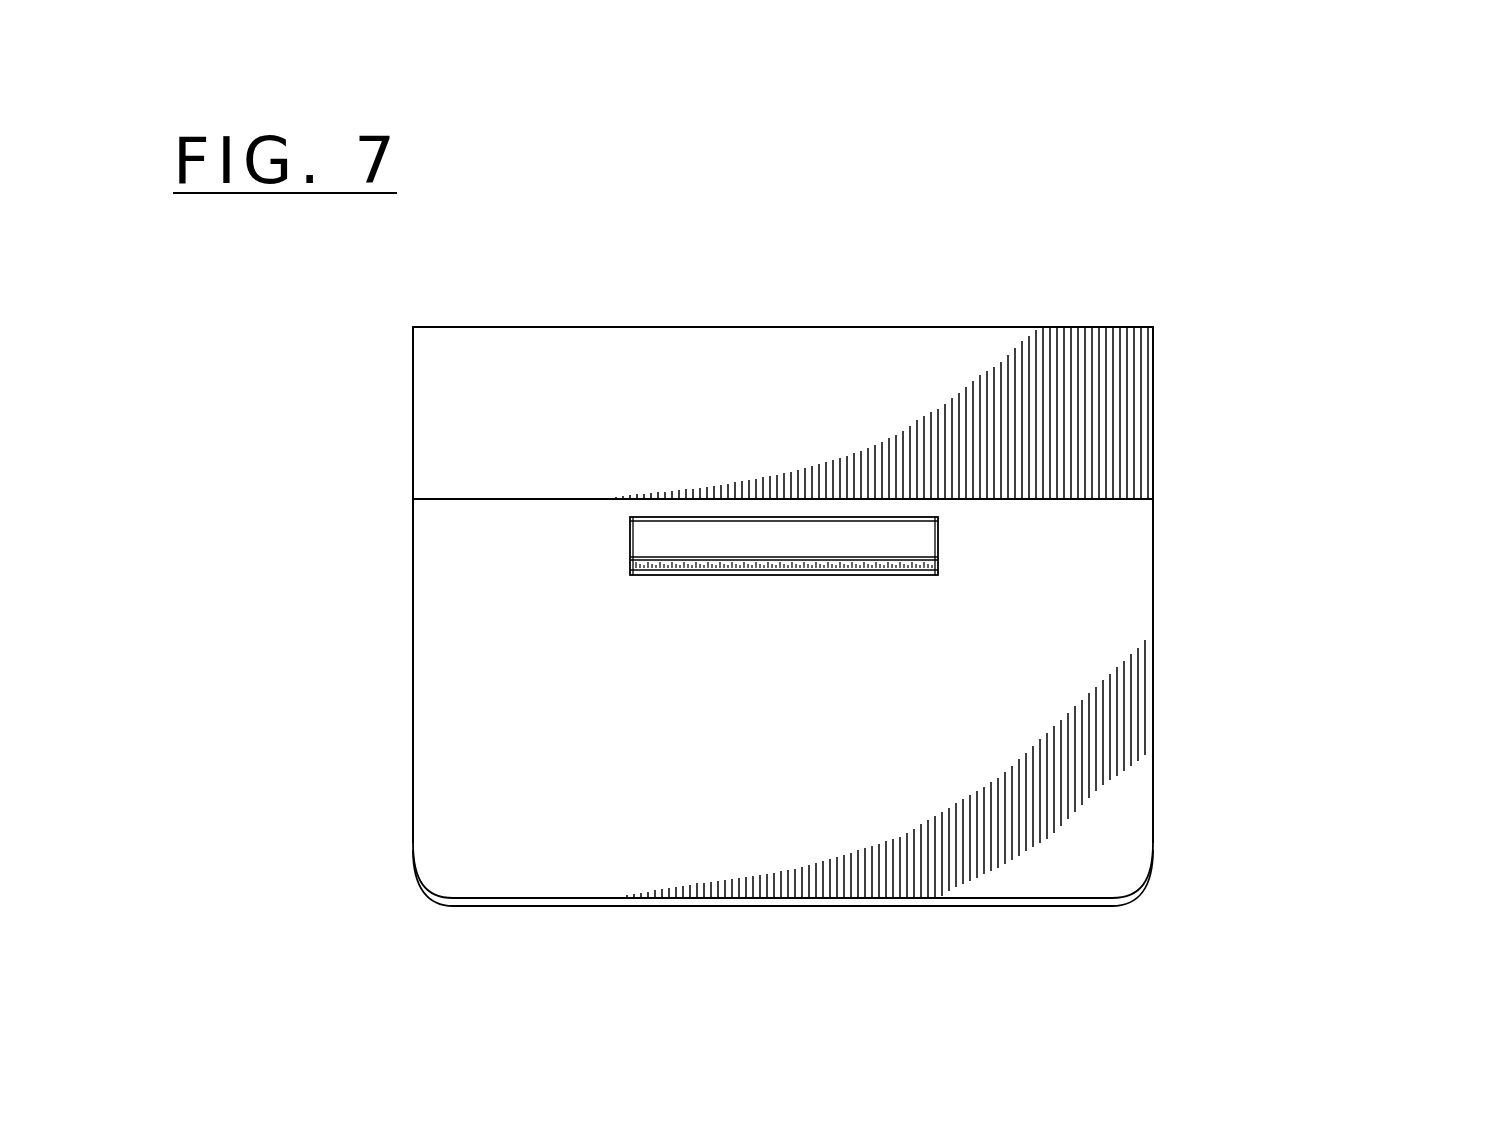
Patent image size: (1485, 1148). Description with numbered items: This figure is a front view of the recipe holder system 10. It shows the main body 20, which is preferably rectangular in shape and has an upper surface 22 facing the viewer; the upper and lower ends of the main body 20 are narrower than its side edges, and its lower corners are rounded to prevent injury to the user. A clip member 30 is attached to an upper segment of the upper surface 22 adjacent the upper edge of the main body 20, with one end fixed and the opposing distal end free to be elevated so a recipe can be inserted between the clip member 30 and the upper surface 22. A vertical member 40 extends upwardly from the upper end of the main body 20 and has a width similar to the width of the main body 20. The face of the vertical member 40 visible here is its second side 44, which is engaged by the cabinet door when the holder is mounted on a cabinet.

The recipe holder system 10 is at (1160, 215).
The main body 20 is at (1153, 700).
The upper surface 22 is at (1112, 852).
The clip member 30 is at (902, 537).
The vertical member 40 is at (1115, 407).
The second side 44 is at (893, 375).